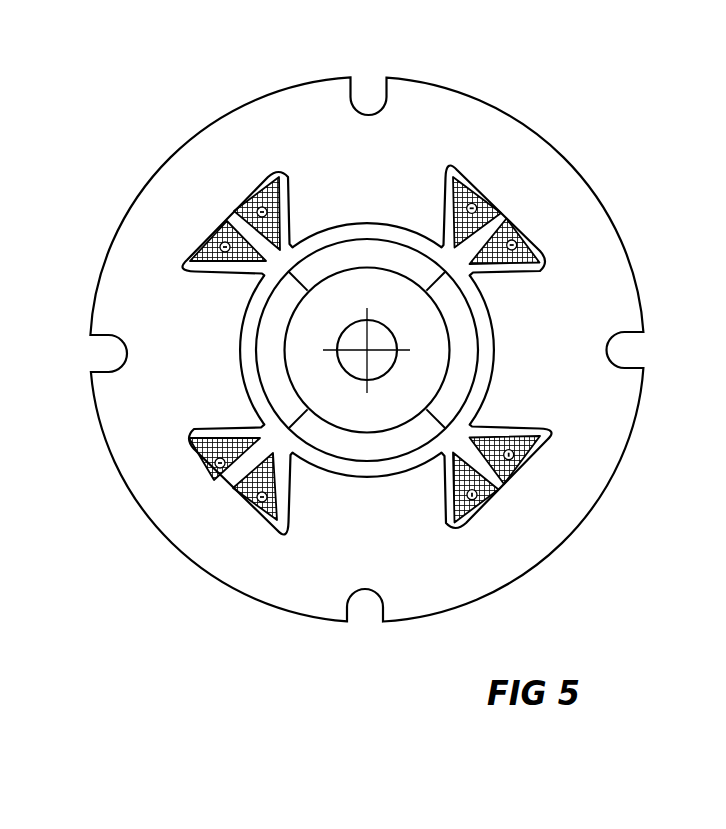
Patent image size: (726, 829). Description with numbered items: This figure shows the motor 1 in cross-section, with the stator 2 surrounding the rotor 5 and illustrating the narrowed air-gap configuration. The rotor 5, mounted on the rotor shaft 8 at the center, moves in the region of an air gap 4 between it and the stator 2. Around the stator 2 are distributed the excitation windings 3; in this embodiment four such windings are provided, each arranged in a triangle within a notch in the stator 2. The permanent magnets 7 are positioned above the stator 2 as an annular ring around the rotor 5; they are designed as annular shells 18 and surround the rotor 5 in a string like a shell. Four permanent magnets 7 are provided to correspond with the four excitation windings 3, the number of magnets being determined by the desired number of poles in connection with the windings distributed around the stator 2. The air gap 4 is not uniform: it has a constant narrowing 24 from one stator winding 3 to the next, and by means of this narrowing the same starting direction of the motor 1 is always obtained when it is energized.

The motor 1 is at (131, 130).
The stator 2 is at (440, 122).
The excitation windings 3 is at (517, 240).
The air gap 4 is at (247, 336).
The rotor 5 is at (303, 364).
The permanent magnets 7 is at (345, 255).
The rotor shaft 8 is at (378, 362).
The annular shells 18 is at (362, 467).
The constant narrowing 24 is at (404, 235).